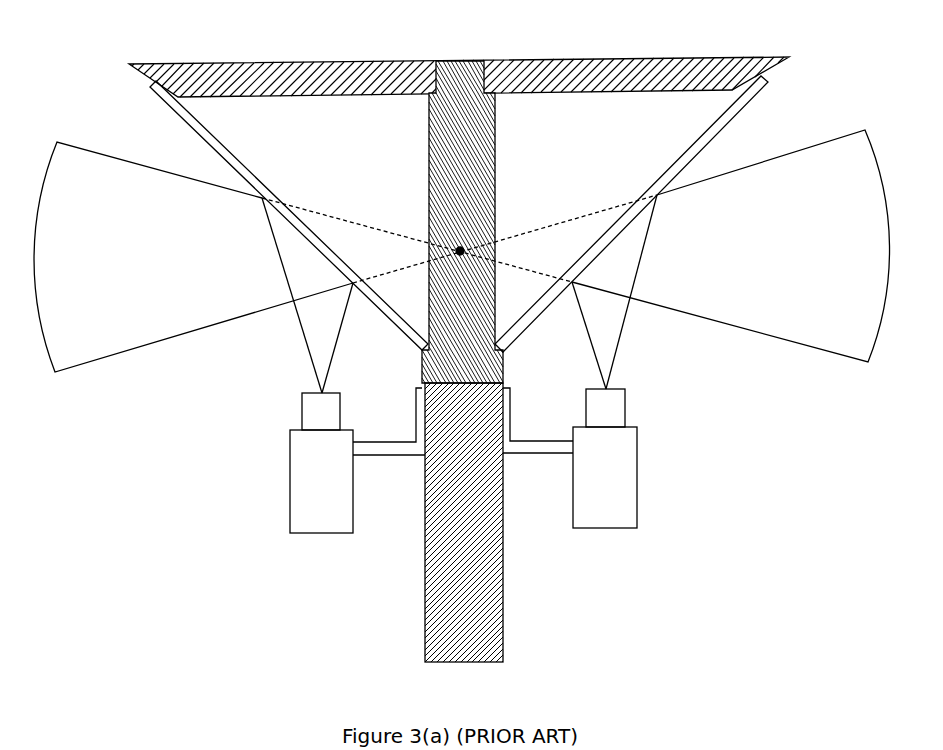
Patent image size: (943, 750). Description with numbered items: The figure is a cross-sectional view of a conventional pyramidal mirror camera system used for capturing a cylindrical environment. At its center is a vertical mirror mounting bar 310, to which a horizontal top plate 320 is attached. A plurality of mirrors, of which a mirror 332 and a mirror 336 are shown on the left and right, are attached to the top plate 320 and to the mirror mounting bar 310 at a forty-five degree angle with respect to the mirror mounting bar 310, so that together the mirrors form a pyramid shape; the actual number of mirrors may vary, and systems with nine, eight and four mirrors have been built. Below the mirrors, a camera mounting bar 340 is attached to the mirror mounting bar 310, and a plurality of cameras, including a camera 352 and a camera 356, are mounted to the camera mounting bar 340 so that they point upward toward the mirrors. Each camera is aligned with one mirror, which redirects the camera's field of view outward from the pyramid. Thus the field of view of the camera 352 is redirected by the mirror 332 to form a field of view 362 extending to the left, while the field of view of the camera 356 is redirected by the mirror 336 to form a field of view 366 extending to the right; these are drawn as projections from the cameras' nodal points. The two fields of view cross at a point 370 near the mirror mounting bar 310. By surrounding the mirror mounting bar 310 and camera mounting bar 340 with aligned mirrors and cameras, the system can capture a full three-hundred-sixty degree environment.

The mirror mounting bar 310 is at (458, 61).
The top plate 320 is at (285, 63).
The mirror 332 is at (238, 156).
The mirror 336 is at (682, 150).
The camera mounting bar 340 is at (465, 662).
The camera 352 is at (321, 463).
The camera 356 is at (605, 458).
The field of view 362 is at (186, 257).
The field of view 366 is at (739, 246).
The virtual viewpoint 370 is at (462, 249).